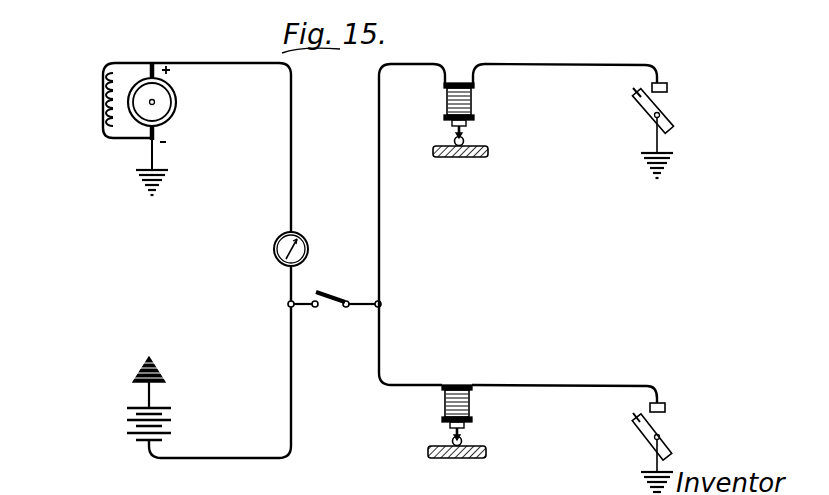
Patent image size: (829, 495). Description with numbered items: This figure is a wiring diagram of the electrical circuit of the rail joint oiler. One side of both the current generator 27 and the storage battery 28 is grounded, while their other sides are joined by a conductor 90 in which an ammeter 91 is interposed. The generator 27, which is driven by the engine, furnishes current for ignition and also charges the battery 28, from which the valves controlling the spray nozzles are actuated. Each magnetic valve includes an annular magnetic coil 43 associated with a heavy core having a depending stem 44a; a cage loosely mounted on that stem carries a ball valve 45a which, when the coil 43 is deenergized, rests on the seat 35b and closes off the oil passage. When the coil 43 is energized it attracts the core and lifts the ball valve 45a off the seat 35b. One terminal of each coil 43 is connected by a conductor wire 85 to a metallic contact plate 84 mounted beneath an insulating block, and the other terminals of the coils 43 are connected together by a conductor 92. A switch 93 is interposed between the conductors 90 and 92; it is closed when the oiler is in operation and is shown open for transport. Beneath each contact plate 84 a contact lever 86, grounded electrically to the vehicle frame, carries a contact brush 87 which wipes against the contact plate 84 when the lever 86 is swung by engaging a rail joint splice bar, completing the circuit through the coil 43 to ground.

The current generator 27 is at (176, 104).
The storage battery 28 is at (167, 408).
The seat 35b is at (465, 148).
The annular magnetic coil 43 is at (475, 96).
The depending stem 44a is at (463, 131).
The ball valve 45a is at (454, 142).
The contact plate 84 is at (668, 87).
The conductor wire 85 is at (651, 66).
The contact lever 86 is at (663, 106).
The contact brush 87 is at (635, 93).
The conductor 90 is at (289, 342).
The ammeter 91 is at (274, 253).
The conductor 92 is at (380, 276).
The switch 93 is at (328, 297).